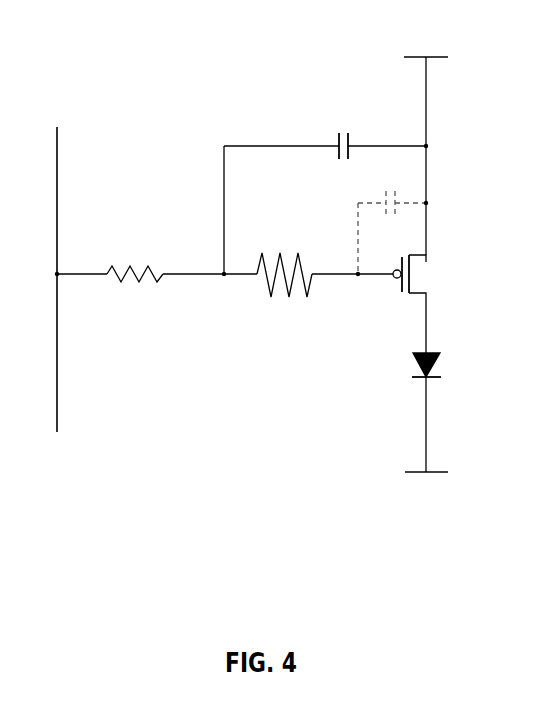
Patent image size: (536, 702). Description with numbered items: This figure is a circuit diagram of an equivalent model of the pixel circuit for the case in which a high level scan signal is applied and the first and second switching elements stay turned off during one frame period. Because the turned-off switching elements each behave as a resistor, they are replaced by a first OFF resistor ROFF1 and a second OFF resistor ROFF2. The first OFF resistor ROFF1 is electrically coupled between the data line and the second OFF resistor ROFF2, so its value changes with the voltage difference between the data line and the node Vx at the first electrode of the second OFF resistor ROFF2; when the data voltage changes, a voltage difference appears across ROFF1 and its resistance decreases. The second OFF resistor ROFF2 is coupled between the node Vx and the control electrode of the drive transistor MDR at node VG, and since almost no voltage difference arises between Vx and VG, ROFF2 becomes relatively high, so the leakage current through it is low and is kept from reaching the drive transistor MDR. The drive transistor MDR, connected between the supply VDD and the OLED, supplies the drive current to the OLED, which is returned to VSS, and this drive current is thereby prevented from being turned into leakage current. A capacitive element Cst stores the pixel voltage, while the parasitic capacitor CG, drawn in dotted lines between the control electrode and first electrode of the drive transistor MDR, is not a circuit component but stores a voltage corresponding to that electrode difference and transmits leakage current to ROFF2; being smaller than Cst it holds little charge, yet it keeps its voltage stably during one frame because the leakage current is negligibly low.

The first OFF resistor ROFF1 is at (132, 255).
The second OFF resistor ROFF2 is at (284, 257).
The first electrode of the second OFF resistor Vx is at (225, 228).
The second electrode of the second OFF resistor VG is at (360, 291).
The capacitive element Cst is at (326, 128).
The parasitic capacitor CG is at (393, 231).
The drive transistor MDR is at (429, 304).
The element OLED is at (456, 412).
The high potential power supply VDD is at (426, 142).
The low potential power supply VSS is at (426, 489).